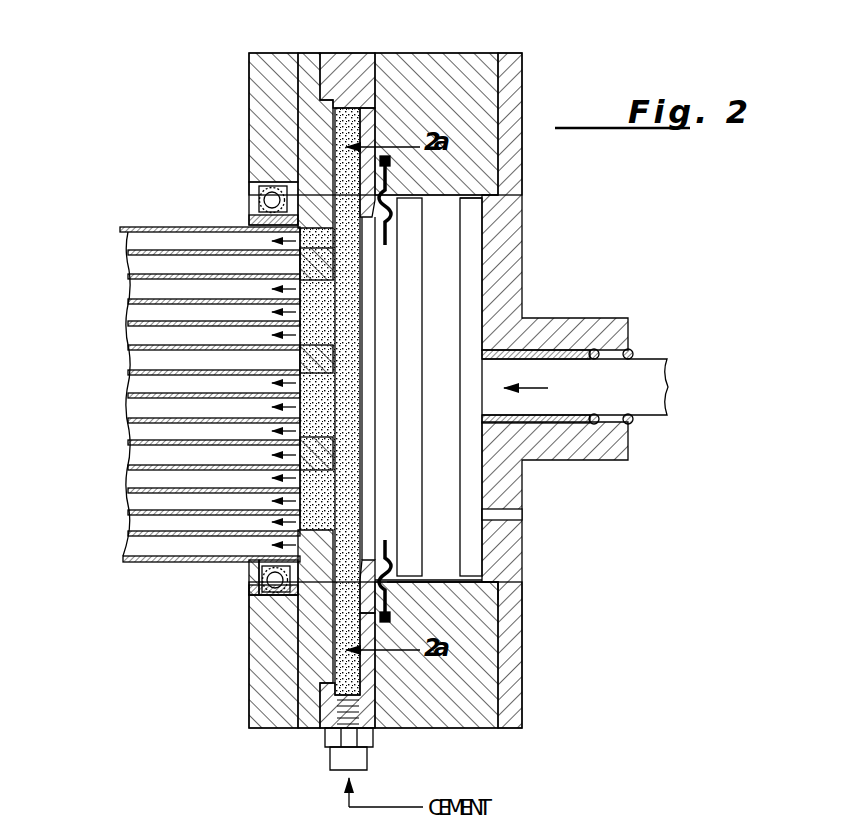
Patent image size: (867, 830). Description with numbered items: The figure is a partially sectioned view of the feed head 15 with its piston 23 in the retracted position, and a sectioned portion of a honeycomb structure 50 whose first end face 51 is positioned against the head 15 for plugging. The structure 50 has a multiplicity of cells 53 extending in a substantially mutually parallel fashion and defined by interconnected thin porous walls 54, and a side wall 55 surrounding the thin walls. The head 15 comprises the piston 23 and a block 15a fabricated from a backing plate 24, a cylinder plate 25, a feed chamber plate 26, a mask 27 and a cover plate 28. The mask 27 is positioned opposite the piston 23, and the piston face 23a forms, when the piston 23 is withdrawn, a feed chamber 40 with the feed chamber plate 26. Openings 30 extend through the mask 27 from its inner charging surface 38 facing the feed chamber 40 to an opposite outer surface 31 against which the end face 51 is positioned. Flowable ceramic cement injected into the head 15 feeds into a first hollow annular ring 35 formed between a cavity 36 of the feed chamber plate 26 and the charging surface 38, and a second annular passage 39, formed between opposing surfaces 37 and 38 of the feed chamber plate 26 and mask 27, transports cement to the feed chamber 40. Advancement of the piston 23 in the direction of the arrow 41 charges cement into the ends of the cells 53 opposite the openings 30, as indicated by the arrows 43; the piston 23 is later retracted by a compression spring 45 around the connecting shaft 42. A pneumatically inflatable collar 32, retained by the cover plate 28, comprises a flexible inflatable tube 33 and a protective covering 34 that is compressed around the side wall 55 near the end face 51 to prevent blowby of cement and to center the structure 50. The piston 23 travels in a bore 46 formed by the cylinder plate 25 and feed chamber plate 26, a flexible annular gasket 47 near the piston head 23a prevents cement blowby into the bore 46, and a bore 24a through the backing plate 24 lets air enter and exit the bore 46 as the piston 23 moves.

The feed head 15 is at (526, 710).
The block 15a is at (546, 78).
The piston 23 is at (450, 465).
The piston face 23a is at (450, 530).
The backing plate 24 is at (505, 215).
The bore 24a is at (515, 513).
The cylinder plate 25 is at (462, 85).
The feed chamber plate 26 is at (336, 62).
The mask 27 is at (307, 53).
The cover plate 28 is at (280, 100).
The openings 30 is at (325, 300).
The outer surface 31 is at (300, 450).
The pneumatically inflatable collar 32 is at (268, 186).
The flexible inflatable tube 33 is at (262, 616).
The protective covering 34 is at (268, 573).
The first hollow annular ring 35 is at (372, 148).
The cavity 36 is at (354, 108).
The opposing surface 37 is at (395, 192).
The charging surface 38 is at (335, 268).
The second annular passage 39 is at (350, 173).
The feed chamber 40 is at (345, 372).
The arrow 41 is at (548, 388).
The connecting shaft 42 is at (652, 370).
The arrows 43 is at (293, 345).
The compression spring 45 is at (630, 424).
The bore 46 is at (495, 605).
The flexible annular gasket 47 is at (395, 568).
The honeycomb structure 50 is at (182, 368).
The first end face 51 is at (300, 255).
The cells 53 is at (140, 333).
The thin porous walls 54 is at (138, 438).
The side wall 55 is at (128, 230).